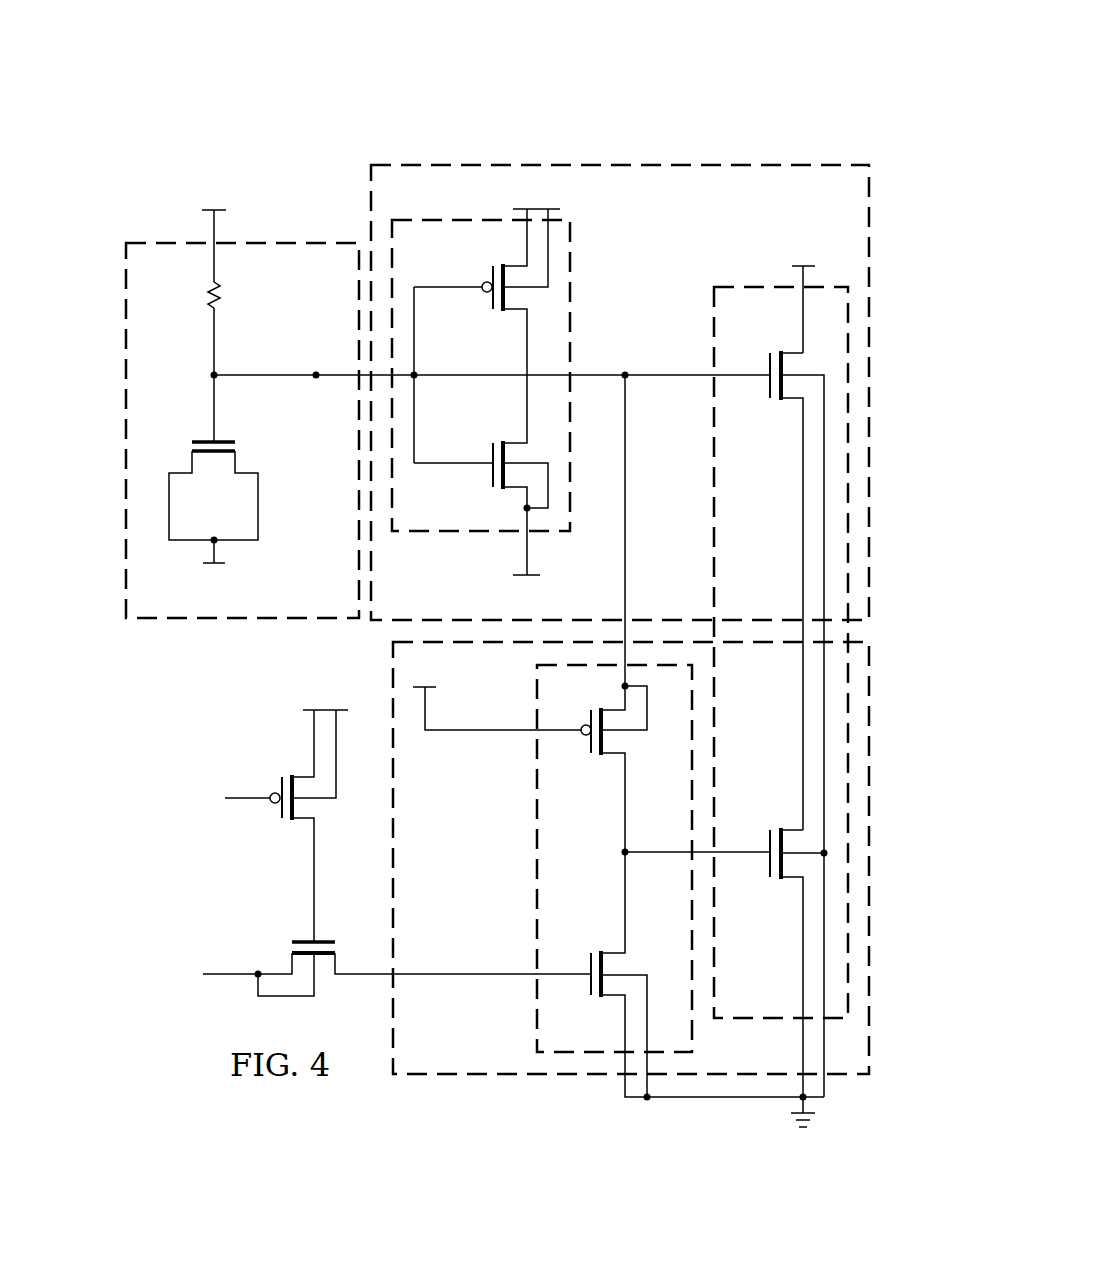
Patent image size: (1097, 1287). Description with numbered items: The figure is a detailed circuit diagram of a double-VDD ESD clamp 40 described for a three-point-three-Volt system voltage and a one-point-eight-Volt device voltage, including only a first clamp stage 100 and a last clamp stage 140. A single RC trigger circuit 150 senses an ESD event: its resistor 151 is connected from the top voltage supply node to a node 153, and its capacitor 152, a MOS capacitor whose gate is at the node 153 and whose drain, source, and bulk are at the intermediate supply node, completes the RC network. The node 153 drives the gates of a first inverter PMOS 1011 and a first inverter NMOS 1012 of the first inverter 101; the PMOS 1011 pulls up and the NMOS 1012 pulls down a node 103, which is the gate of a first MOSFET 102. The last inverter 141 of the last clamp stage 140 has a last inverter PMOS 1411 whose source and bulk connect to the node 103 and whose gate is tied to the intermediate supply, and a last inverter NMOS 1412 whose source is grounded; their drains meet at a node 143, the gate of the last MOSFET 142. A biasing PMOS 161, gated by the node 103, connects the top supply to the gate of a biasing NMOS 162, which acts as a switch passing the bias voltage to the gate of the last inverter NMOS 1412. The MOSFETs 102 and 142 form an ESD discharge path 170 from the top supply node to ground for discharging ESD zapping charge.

The 2X-VDD ESD clamp 40 is at (850, 62).
The first clamp stage 100 is at (884, 224).
The first inverter 101 is at (582, 242).
The first inverter PMOS 1011 is at (490, 309).
The first inverter NMOS 1012 is at (488, 446).
The first MOSFET 102 is at (764, 364).
The node 103 is at (624, 371).
The last clamp stage 140 is at (886, 972).
The last inverter 141 is at (520, 1030).
The last inverter PMOS 1411 is at (591, 754).
The last inverter NMOS 1412 is at (590, 953).
The last MOSFET 142 is at (772, 877).
The node 143 is at (630, 858).
The RC trigger circuit 150 is at (120, 345).
The resistor 151 is at (218, 292).
The capacitor 152 is at (204, 440).
The node 153 is at (315, 372).
The biasing PMOS 161 is at (280, 820).
The biasing NMOS 162 is at (326, 940).
The ESD discharge path 170 is at (734, 278).